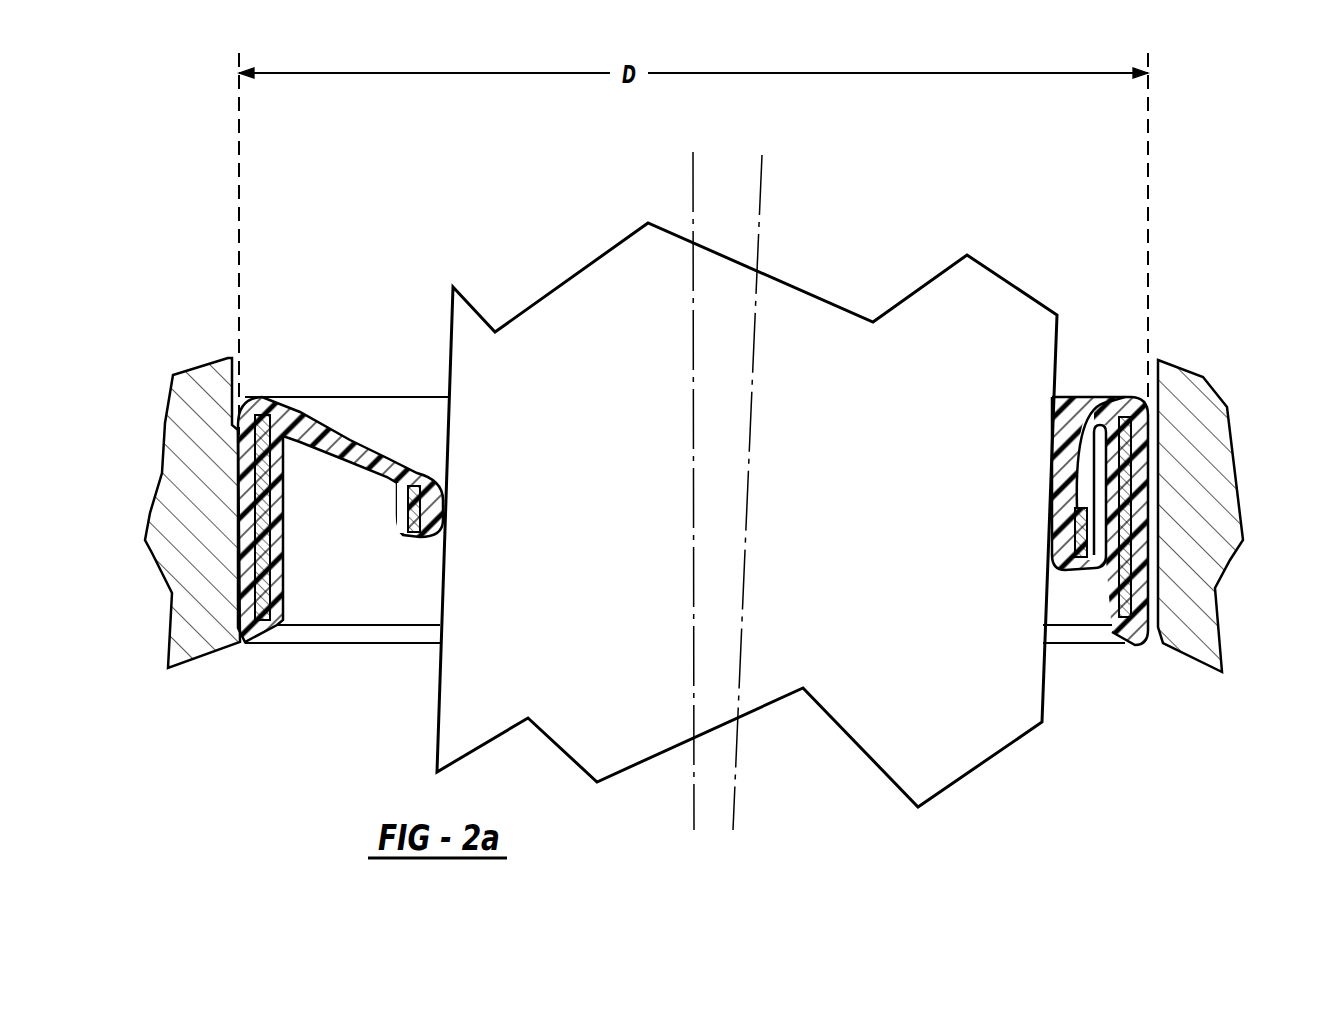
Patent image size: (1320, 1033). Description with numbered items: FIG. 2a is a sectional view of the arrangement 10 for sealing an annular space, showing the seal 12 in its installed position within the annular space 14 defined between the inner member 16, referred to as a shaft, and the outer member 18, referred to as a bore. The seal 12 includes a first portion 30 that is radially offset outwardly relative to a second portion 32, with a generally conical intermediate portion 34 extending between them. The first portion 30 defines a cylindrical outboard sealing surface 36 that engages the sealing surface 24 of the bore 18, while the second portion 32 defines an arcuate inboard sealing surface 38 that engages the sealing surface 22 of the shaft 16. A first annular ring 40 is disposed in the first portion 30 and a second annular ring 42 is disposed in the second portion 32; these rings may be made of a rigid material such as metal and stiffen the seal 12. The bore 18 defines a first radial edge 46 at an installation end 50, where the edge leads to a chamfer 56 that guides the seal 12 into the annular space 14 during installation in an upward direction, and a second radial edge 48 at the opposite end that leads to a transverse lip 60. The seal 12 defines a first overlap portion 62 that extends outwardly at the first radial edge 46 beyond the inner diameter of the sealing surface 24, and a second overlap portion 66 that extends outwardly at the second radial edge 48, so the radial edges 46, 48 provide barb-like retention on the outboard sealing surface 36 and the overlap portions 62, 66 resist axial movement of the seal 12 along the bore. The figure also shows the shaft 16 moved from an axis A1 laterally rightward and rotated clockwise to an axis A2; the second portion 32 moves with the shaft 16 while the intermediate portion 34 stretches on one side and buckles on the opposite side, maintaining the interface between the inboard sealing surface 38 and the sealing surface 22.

The arrangement for sealing an annular space 10 is at (1245, 163).
The seal 12 is at (1171, 487).
The annular space 14 is at (382, 442).
The inner member 16 is at (828, 325).
The outer member 18 is at (1207, 407).
The sealing surface 22 is at (1058, 425).
The sealing surface 24 is at (1143, 545).
The first portion 30 is at (242, 420).
The second portion 32 is at (430, 465).
The intermediate portion 34 is at (343, 447).
The outboard sealing surface 36 is at (233, 505).
The inboard sealing surface 38 is at (447, 503).
The first annular ring 40 is at (267, 567).
The second annular ring 42 is at (408, 505).
The first radial edge 46 is at (1145, 632).
The second radial edge 48 is at (1150, 468).
The installation end 50 is at (195, 652).
The chamfer 56 is at (233, 630).
The transverse lip 60 is at (1150, 468).
The first overlap portion 62 is at (240, 640).
The second overlap portion 66 is at (215, 430).
The axis A1 is at (690, 500).
The axis A2 is at (748, 502).